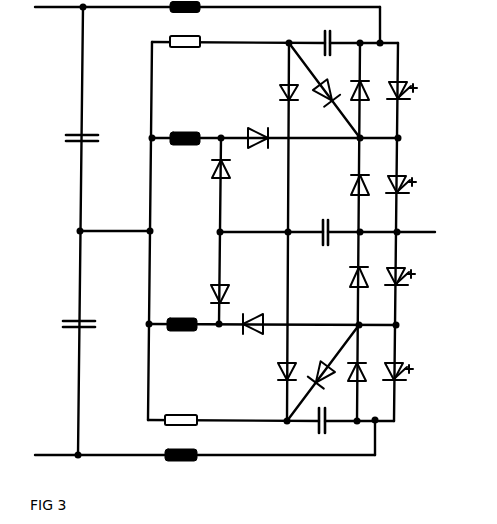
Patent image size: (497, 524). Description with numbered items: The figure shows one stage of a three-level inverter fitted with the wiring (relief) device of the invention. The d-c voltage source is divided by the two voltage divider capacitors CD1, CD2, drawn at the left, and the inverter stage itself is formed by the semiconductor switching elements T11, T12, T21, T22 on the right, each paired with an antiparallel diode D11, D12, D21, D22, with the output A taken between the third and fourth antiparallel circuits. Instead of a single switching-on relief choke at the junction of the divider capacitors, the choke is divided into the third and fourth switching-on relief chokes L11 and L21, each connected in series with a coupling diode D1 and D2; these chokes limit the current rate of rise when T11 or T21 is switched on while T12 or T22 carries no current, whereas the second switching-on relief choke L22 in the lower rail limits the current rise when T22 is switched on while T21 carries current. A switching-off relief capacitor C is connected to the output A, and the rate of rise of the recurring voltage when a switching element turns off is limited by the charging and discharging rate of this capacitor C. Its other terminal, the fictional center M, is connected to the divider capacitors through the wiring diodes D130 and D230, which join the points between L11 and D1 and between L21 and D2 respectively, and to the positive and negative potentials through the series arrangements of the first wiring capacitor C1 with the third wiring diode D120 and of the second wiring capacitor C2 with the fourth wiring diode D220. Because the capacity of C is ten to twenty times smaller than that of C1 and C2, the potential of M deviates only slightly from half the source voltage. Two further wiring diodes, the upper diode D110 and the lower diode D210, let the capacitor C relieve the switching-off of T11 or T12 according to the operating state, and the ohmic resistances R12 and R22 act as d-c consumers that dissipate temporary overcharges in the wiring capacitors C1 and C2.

The ohmic resistance R12 is at (174, 47).
The ohmic resistance R22 is at (174, 405).
The third switching-on relief choke L11 is at (178, 131).
The fourth switching-on relief choke L21 is at (172, 316).
The second switching-on relief choke L22 is at (192, 446).
The voltage divider capacitor CD1 is at (88, 129).
The voltage divider capacitor CD2 is at (86, 317).
The first wiring capacitor C1 is at (331, 36).
The switching-off relief capacitor C is at (329, 226).
The second wiring capacitor C2 is at (326, 414).
The output A is at (419, 232).
The fictional center M is at (218, 233).
The first coupling diode D1 is at (262, 122).
The second coupling diode D2 is at (260, 336).
The upper wiring diode D110 is at (319, 82).
The third wiring diode D120 is at (279, 93).
The wiring diode D130 is at (231, 170).
The lower wiring diode D210 is at (312, 368).
The fourth wiring diode D220 is at (278, 375).
The wiring diode D230 is at (229, 296).
The antiparallel diode D11 is at (369, 185).
The antiparallel diode D12 is at (369, 90).
The antiparallel diode D21 is at (368, 278).
The antiparallel diode D22 is at (366, 374).
The semiconductor switching element T11 is at (404, 174).
The semiconductor switching element T12 is at (405, 80).
The semiconductor switching element T21 is at (403, 266).
The semiconductor switching element T22 is at (401, 361).